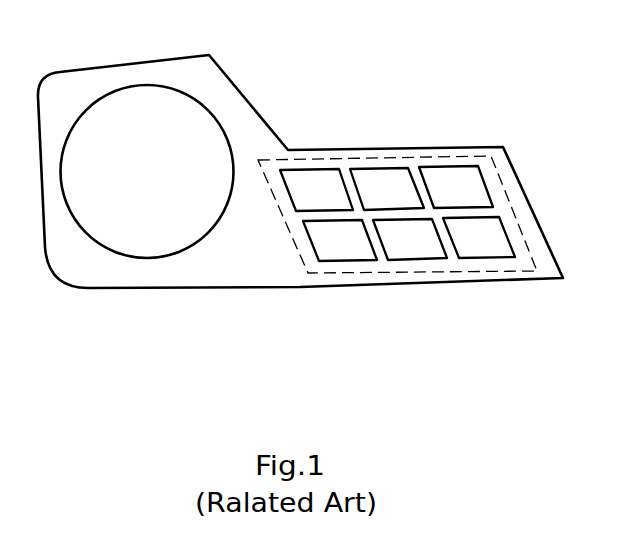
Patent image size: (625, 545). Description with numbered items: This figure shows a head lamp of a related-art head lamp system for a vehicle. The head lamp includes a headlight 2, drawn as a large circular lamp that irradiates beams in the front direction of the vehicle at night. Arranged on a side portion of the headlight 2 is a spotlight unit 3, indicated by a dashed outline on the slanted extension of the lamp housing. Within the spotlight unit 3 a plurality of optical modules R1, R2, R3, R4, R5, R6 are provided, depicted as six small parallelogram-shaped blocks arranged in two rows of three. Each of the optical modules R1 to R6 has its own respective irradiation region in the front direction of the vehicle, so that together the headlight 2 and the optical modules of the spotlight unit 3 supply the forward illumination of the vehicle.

The headlight 2 is at (136, 84).
The spotlight unit 3 is at (485, 155).
The optical module R1 is at (489, 248).
The optical module R2 is at (445, 172).
The optical module R3 is at (420, 250).
The optical module R4 is at (381, 170).
The optical module R5 is at (352, 252).
The optical module R6 is at (320, 170).